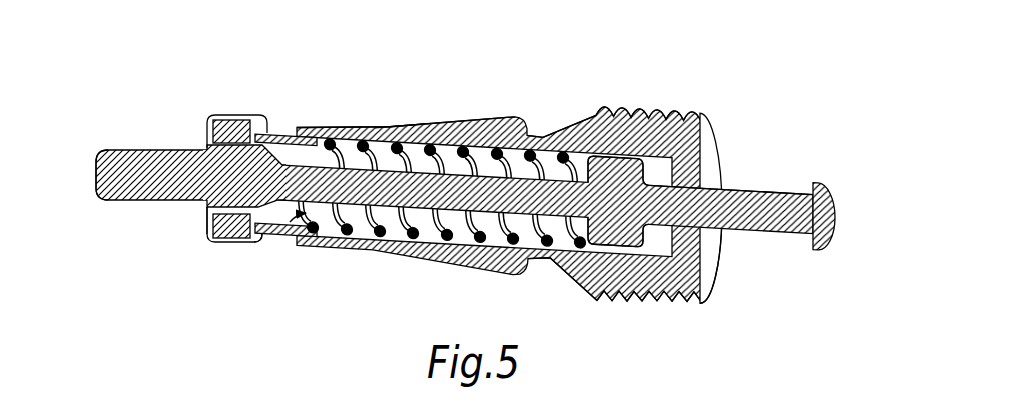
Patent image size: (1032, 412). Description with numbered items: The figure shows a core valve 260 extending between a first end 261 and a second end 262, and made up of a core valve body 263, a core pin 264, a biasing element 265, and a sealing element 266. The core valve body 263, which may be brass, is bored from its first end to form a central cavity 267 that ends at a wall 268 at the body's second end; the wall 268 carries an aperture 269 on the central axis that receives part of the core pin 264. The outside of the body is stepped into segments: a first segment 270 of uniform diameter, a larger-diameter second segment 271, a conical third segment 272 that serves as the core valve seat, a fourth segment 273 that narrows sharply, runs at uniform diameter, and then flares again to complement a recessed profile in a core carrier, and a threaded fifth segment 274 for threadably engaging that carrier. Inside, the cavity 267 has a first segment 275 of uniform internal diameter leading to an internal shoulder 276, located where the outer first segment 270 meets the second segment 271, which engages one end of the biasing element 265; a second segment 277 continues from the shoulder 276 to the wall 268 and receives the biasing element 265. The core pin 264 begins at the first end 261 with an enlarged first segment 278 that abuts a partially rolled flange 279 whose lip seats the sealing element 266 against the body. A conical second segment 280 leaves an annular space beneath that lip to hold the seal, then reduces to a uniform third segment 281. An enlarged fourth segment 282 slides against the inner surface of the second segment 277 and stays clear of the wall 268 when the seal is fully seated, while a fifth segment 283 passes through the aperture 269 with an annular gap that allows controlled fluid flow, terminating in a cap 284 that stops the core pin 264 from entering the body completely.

The core valve 260 is at (604, 90).
The first end 261 is at (84, 168).
The second end 262 is at (846, 232).
The core valve body 263 is at (467, 117).
The core pin 264 is at (195, 173).
The biasing element 265 is at (424, 226).
The sealing element 266 is at (225, 117).
The central cavity 267 is at (290, 222).
The wall 268 is at (686, 295).
The aperture 269 is at (708, 190).
The first segment 270 is at (283, 128).
The second segment 271 is at (357, 127).
The third segment 272 is at (399, 127).
The fourth segment 273 is at (564, 130).
The fifth segment 274 is at (648, 111).
The first segment 275 is at (263, 243).
The internal shoulder 276 is at (326, 130).
The second segment 277 is at (467, 238).
The first segment 278 is at (122, 203).
The flange 279 is at (207, 233).
The second segment 280 is at (221, 244).
The third segment 281 is at (371, 212).
The fourth segment 282 is at (602, 240).
The fifth segment 283 is at (758, 222).
The cap 284 is at (818, 182).